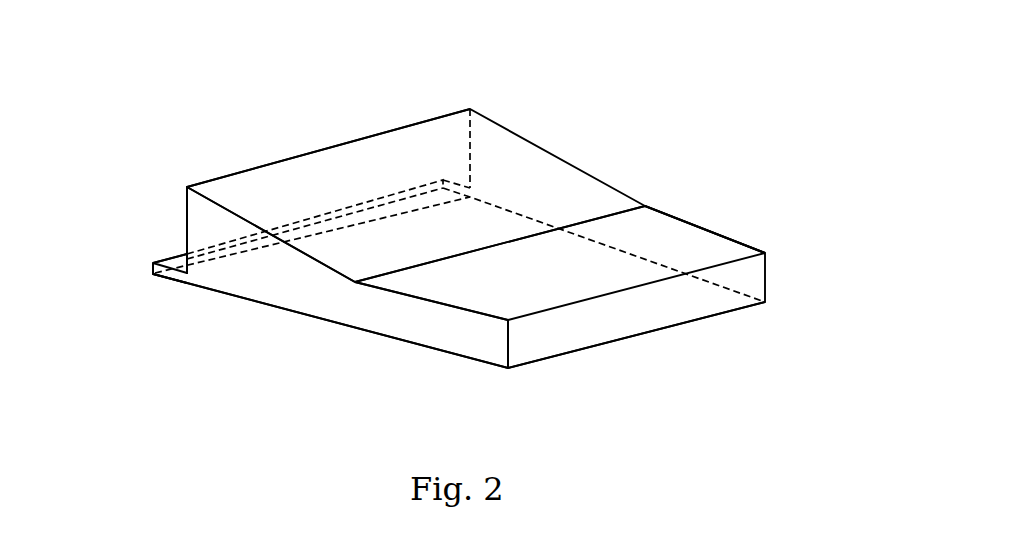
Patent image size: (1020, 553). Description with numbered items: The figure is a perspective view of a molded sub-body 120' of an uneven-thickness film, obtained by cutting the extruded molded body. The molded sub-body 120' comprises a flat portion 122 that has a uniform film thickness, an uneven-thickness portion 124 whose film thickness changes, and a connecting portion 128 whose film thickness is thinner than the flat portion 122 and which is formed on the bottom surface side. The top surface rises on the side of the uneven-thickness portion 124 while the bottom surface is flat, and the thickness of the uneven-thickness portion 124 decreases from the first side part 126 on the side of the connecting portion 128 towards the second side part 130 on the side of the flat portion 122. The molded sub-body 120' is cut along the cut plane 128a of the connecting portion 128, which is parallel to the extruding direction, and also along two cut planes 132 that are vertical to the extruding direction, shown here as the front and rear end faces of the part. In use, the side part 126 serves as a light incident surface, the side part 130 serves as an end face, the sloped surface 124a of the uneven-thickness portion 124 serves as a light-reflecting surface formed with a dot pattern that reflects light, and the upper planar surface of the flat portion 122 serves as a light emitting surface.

The molded sub-body 120' is at (459, 201).
The flat portion 122 is at (507, 378).
The uneven-thickness portion 124 is at (338, 335).
The sloped surface 124a is at (385, 155).
The first side part 126 is at (187, 213).
The connecting portion 128 is at (172, 278).
The cut plane 128a is at (303, 223).
The second side part 130 is at (560, 335).
The cut planes 132 is at (355, 318).